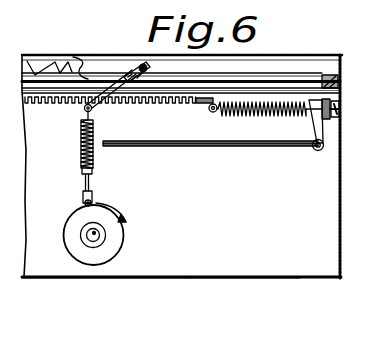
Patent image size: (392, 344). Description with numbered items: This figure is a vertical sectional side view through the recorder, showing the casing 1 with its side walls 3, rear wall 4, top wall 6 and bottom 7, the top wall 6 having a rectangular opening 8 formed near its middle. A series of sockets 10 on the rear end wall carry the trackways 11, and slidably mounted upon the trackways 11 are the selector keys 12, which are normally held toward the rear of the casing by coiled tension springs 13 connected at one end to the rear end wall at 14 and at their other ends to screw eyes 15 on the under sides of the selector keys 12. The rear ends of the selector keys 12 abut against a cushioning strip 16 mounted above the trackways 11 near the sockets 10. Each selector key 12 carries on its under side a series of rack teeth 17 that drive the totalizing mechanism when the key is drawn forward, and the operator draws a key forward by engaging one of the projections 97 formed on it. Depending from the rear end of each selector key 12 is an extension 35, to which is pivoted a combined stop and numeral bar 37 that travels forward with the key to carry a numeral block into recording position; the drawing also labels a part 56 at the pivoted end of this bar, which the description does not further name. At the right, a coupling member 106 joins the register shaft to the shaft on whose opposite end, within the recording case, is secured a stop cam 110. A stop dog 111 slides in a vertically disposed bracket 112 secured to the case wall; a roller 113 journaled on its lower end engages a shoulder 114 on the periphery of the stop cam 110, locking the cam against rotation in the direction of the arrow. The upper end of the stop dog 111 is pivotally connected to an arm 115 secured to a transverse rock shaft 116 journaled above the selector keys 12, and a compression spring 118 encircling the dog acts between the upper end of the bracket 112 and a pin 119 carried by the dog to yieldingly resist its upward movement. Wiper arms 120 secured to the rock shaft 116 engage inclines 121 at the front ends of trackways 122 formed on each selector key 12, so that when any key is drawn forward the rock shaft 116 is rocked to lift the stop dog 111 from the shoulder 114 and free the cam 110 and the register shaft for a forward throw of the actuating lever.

The casing 1 is at (177, 279).
The side walls 3 is at (254, 269).
The rear wall 4 is at (336, 249).
The top wall 6 is at (80, 57).
The bottom 7 is at (122, 278).
The rectangular opening 8 is at (34, 67).
The sockets 10 is at (325, 78).
The trackways 11 is at (19, 83).
The selector keys 12 is at (33, 82).
The coiled tension springs 13 is at (240, 113).
The spring connection 14 is at (333, 119).
The screw eyes 15 is at (210, 130).
The cushioning strip 16 is at (316, 77).
The rack teeth 17 is at (60, 105).
The extension 35 is at (311, 121).
The combined stop and numeral bar 37 is at (182, 143).
The lever pivot 56 is at (314, 151).
The projections 97 is at (51, 65).
The coupling member 106 is at (107, 235).
The stop cam 110 is at (117, 245).
The stop dog 111 is at (83, 200).
The bracket 112 is at (84, 181).
The roller 113 is at (93, 205).
The shoulder 114 is at (101, 201).
The arm 115 is at (100, 110).
The rock shaft 116 is at (134, 70).
The compression spring 118 is at (80, 138).
The pin 119 is at (80, 166).
The wiper arms 120 is at (140, 65).
The inclines 121 is at (150, 76).
The trackways 122 is at (258, 70).